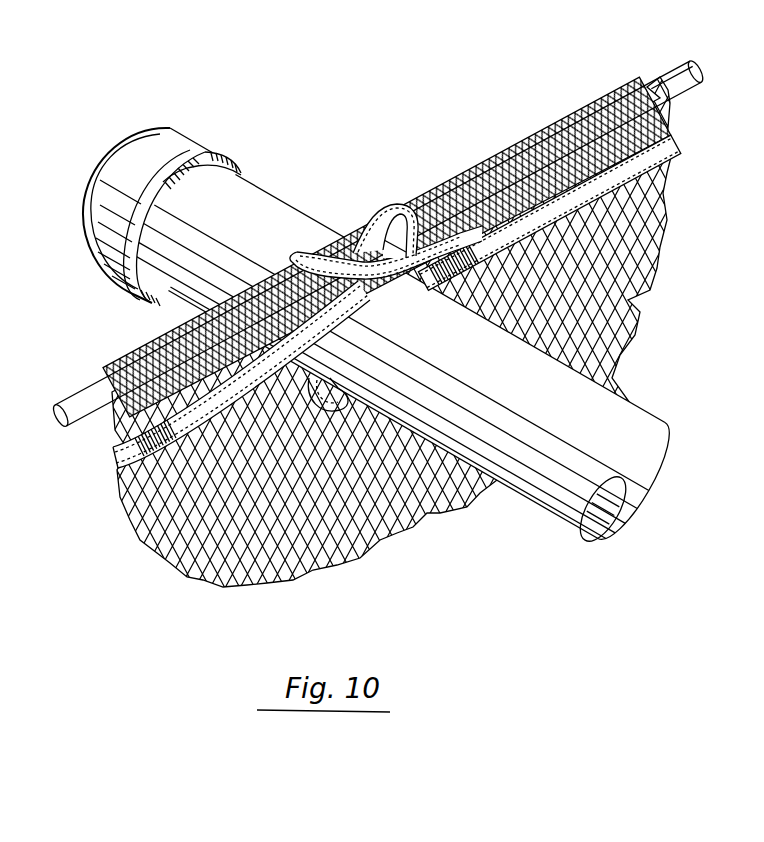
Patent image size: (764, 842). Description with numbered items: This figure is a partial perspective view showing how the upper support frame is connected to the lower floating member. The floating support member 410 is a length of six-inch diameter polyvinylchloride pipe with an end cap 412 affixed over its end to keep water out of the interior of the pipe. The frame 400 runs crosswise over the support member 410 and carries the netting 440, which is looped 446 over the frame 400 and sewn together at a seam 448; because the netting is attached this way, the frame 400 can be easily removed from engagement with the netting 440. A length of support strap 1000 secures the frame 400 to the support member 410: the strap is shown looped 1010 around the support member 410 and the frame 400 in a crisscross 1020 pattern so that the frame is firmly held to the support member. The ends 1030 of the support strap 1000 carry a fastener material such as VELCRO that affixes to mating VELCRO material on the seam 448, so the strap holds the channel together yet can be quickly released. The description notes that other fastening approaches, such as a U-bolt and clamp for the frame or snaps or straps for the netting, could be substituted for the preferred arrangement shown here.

The frame 400 is at (672, 72).
The support member 410 is at (263, 223).
The end cap 412 is at (152, 168).
The netting 440 is at (424, 332).
The loop of netting 446 is at (140, 362).
The seam 448 is at (667, 148).
The support strap 1000 is at (400, 207).
The loop 1010 is at (320, 378).
The crisscross pattern 1020 is at (380, 288).
The strap ends 1030 is at (410, 398).